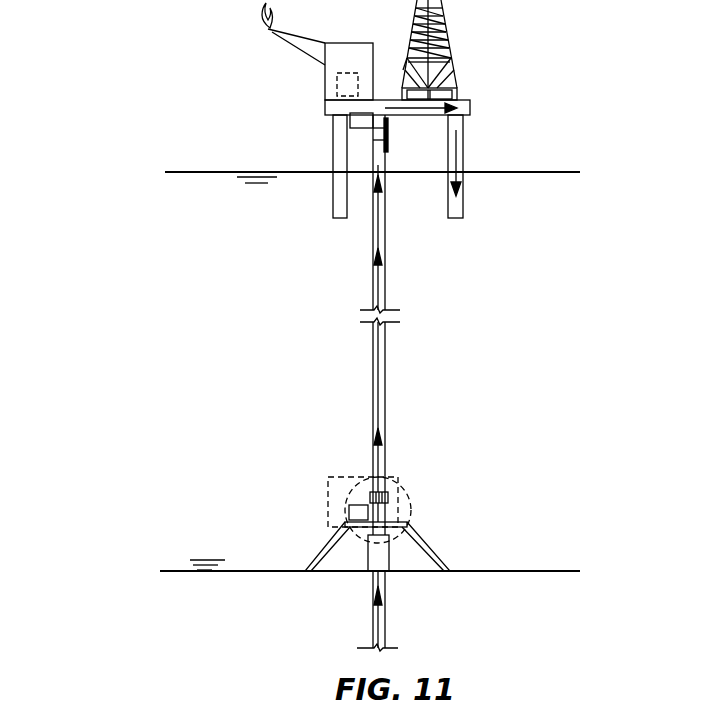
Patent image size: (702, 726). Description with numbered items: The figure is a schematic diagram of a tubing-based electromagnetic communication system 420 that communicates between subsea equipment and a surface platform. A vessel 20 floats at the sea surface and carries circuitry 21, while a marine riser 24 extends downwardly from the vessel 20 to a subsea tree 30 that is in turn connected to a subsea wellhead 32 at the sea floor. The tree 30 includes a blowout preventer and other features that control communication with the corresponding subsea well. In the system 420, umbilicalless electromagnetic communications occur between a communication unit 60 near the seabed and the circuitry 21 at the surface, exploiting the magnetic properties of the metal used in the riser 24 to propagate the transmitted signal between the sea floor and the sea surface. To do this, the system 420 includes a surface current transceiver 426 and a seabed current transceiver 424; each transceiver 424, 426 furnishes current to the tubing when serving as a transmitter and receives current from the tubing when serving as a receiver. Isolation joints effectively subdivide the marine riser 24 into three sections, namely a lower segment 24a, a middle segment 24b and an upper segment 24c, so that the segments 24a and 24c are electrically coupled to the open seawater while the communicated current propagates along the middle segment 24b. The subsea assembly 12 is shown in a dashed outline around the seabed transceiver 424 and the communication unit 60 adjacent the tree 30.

The tubing-based electromagnetic communication system 420 is at (155, 50).
The vessel 20 is at (464, 143).
The circuitry 21 is at (348, 72).
The marine riser 24 is at (385, 243).
The riser segment 24a is at (384, 516).
The middle riser segment 24b is at (373, 406).
The riser segment 24c is at (372, 123).
The surface current transceiver 426 is at (374, 140).
The seabed current transceiver 424 is at (386, 495).
The subsea assembly 12 is at (357, 478).
The communication unit 60 is at (329, 511).
The subsea tree 30 is at (314, 564).
The subsea wellhead 32 is at (384, 560).